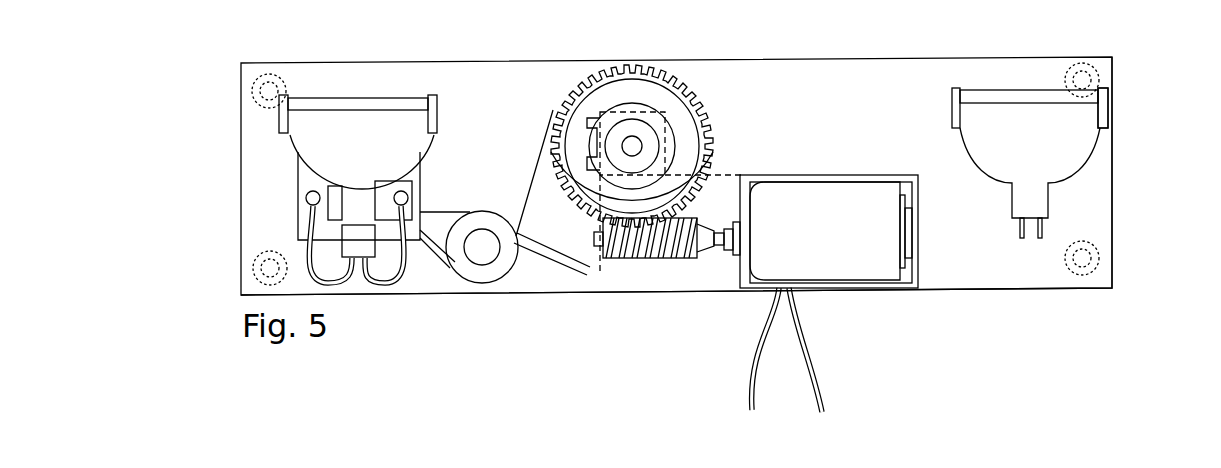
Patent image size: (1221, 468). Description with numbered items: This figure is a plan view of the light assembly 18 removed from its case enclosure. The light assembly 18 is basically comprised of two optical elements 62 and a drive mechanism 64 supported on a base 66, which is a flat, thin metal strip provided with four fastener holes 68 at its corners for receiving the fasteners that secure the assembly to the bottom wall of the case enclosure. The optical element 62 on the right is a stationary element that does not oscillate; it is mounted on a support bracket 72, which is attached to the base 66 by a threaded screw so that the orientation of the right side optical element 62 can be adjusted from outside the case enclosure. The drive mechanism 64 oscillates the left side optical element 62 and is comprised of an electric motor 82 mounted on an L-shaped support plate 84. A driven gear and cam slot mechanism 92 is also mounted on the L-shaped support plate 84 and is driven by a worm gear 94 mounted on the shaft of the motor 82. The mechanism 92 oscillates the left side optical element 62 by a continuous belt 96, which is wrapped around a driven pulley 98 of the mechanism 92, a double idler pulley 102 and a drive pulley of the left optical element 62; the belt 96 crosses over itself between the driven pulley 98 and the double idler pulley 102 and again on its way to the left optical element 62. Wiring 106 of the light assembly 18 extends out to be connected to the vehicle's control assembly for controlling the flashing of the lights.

The light assembly 18 is at (995, 313).
The optical element 62 is at (317, 78).
The drive mechanism 64 is at (756, 148).
The base 66 is at (1102, 210).
The fastener holes 68 is at (235, 92).
The support bracket 72 is at (1108, 107).
The electric motor 82 is at (860, 268).
The L-shaped support plate 84 is at (705, 283).
The driven gear and cam slot mechanism 92 is at (568, 69).
The worm gear 94 is at (645, 246).
The continuous belt 96 is at (547, 262).
The driven pulley 98 is at (590, 268).
The double idler pulley 102 is at (477, 282).
The wiring 106 is at (758, 380).